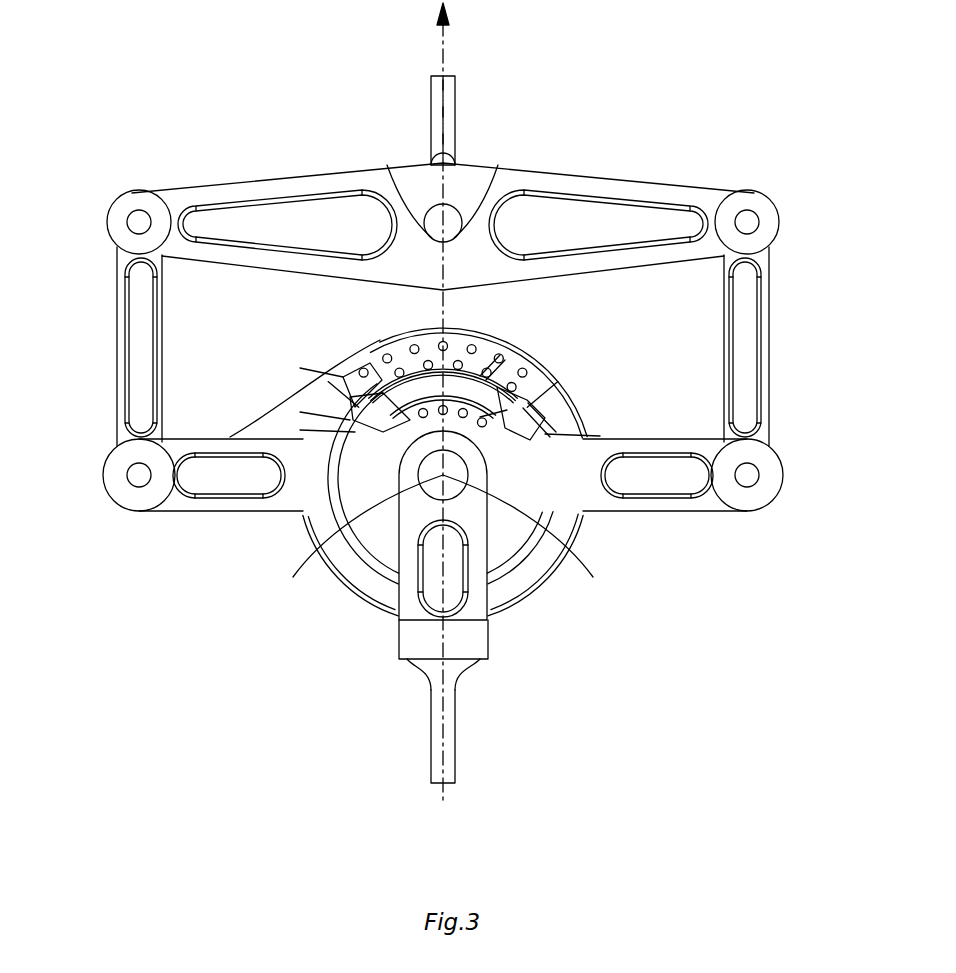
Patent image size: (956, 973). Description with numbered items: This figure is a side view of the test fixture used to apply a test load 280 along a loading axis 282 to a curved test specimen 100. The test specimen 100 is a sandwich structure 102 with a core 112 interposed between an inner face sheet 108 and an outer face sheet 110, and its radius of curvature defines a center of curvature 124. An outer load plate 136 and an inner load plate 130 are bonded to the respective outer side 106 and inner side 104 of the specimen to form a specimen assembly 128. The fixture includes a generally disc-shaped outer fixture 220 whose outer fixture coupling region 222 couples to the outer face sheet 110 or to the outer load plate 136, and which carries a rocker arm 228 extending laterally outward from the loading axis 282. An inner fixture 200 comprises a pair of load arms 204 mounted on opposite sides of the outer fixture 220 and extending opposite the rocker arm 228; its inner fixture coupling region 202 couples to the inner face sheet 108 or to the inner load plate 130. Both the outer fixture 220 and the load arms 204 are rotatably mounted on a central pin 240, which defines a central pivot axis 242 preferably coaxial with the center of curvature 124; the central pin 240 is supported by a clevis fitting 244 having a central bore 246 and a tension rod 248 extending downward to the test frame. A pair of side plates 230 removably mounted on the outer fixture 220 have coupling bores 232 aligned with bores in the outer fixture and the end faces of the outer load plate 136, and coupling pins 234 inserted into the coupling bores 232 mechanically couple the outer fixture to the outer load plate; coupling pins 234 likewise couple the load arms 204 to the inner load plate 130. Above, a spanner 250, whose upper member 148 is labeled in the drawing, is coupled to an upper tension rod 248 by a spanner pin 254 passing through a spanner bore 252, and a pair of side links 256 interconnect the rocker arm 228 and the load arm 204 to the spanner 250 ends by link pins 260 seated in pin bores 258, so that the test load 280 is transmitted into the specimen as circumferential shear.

The test specimen 100 is at (530, 410).
The sandwich structure 102 is at (368, 397).
The inner side 104 is at (466, 352).
The outer side 106 is at (482, 378).
The inner face sheet 108 is at (452, 372).
The outer face sheet 110 is at (500, 382).
The core 112 is at (392, 372).
The center of curvature 124 is at (530, 512).
The specimen assembly 128 is at (560, 422).
The inner load plate 130 is at (345, 418).
The outer load plate 136 is at (350, 367).
The upper frame bar 148 is at (592, 176).
The inner fixture 200 is at (576, 536).
The inner fixture coupling region 202 is at (504, 428).
The load arms 204 is at (680, 518).
The outer fixture 220 is at (290, 528).
The outer fixture coupling region 222 is at (483, 354).
The rocker arm 228 is at (176, 518).
The side plates 230 is at (352, 374).
The coupling bores 232 is at (500, 355).
The coupling pins 234 is at (565, 331).
The central pin 240 is at (470, 476).
The central pivot axis 242 is at (320, 560).
The clevis fitting 244 is at (490, 643).
The central bore 246 is at (396, 622).
The tension rod 248 is at (456, 108).
The spanner 250 is at (442, 310).
The spanner bore 252 is at (452, 220).
The spanner pin 254 is at (418, 192).
The side links 256 is at (117, 337).
The pin bores 258 is at (136, 222).
The link pins 260 is at (130, 208).
The test load 280 is at (450, 40).
The loading axis 282 is at (446, 90).